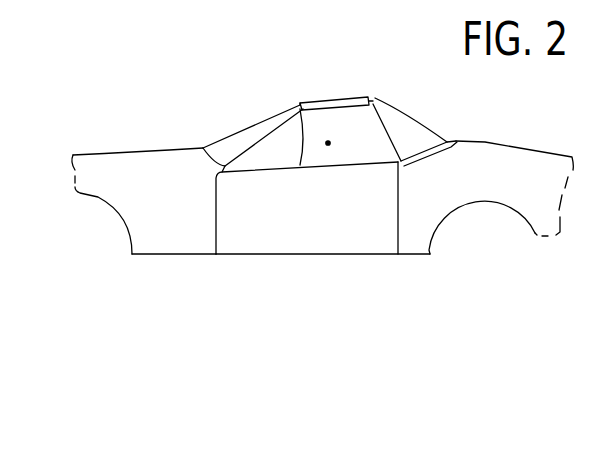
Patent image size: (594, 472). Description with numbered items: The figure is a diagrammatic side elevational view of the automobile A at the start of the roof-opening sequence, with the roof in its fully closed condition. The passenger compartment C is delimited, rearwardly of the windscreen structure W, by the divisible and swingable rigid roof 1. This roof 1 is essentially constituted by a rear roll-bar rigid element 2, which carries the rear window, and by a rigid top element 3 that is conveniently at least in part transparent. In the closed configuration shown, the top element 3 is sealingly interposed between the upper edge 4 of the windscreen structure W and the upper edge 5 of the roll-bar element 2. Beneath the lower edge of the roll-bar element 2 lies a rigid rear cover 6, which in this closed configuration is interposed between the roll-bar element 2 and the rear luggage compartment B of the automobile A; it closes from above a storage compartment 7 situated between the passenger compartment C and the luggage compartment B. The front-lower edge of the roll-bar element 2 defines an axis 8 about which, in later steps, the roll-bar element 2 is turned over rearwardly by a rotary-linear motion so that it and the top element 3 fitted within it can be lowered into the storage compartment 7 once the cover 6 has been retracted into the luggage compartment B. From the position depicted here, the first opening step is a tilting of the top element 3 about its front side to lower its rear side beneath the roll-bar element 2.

The automobile A is at (154, 138).
The windscreen structure W is at (228, 140).
The roof 1 is at (363, 85).
The rear roll-bar rigid element 2 is at (418, 122).
The rigid top element 3 is at (332, 96).
The upper edge of the windscreen structure 4 is at (300, 165).
The upper edge of the roll-bar element 5 is at (375, 100).
The rigid rear cover 6 is at (468, 145).
The storage compartment 7 is at (433, 192).
The axis 8 is at (397, 163).
The rear luggage compartment B is at (532, 158).
The passenger compartment C is at (328, 131).